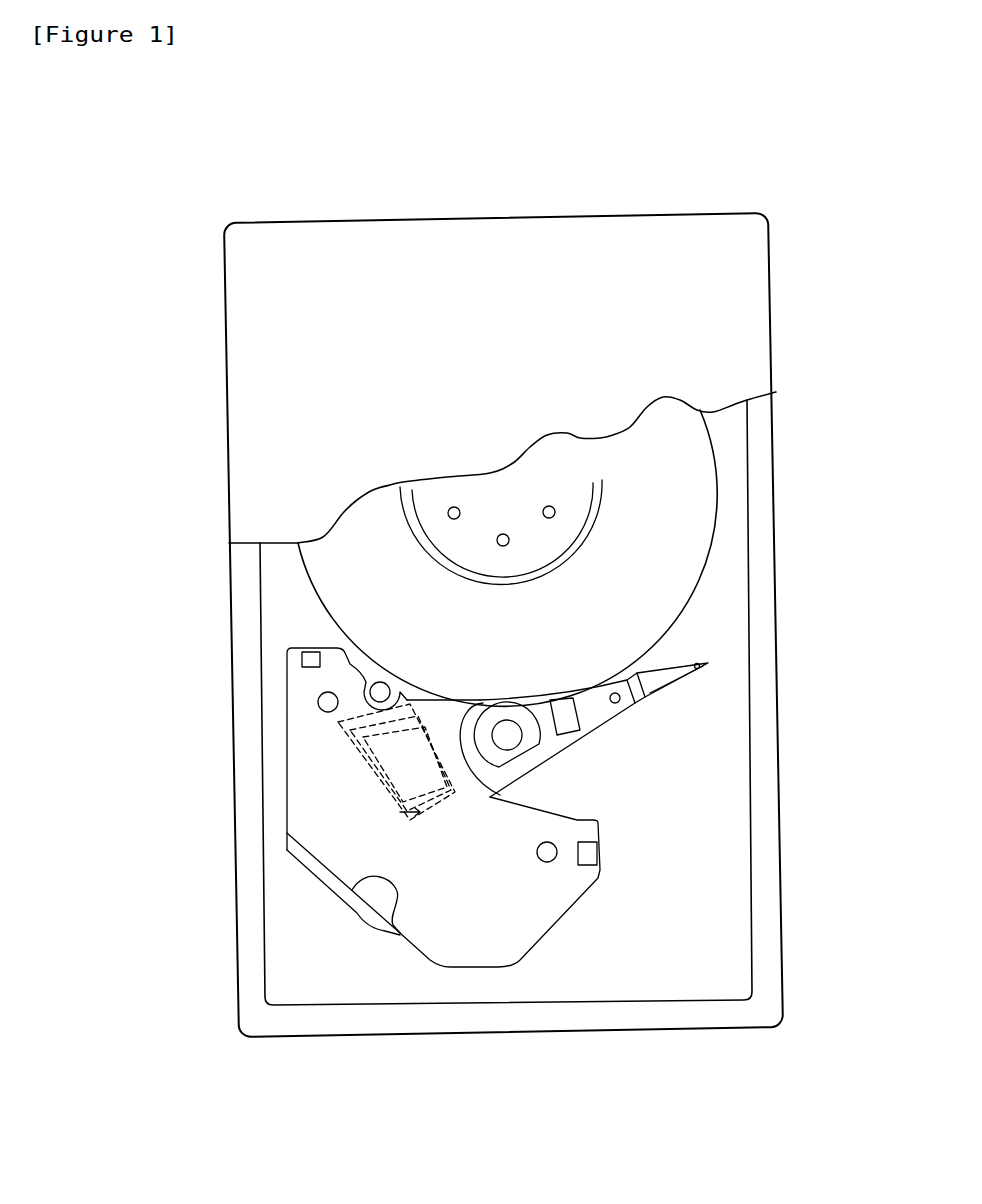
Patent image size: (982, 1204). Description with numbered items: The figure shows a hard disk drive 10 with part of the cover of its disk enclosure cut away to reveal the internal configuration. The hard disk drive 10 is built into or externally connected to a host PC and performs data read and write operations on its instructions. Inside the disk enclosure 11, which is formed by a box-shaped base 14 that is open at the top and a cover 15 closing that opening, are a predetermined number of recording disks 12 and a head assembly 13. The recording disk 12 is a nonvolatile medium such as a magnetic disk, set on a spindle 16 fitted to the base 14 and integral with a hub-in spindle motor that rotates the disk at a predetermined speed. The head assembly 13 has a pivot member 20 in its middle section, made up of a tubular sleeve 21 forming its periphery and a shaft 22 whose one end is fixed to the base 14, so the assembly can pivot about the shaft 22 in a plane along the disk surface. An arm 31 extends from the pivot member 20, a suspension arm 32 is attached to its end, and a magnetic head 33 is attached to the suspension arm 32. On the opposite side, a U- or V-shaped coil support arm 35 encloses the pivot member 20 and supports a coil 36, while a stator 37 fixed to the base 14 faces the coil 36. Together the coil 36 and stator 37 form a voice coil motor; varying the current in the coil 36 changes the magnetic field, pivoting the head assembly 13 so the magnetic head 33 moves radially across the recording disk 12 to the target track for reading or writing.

The hard disk drive 10 is at (723, 195).
The disk enclosure 11 is at (168, 493).
The recording disk 12 is at (683, 543).
The head assembly 13 is at (565, 741).
The base 14 is at (243, 571).
The cover 15 is at (272, 493).
The spindle 16 is at (567, 478).
The pivot member 20 is at (530, 742).
The sleeve 21 is at (490, 758).
The shaft 22 is at (507, 735).
The arm 31 is at (547, 700).
The suspension arm 32 is at (657, 690).
The magnetic head 33 is at (688, 673).
The coil support arm 35 is at (447, 700).
The coil 36 is at (380, 788).
The stator 37 is at (320, 758).